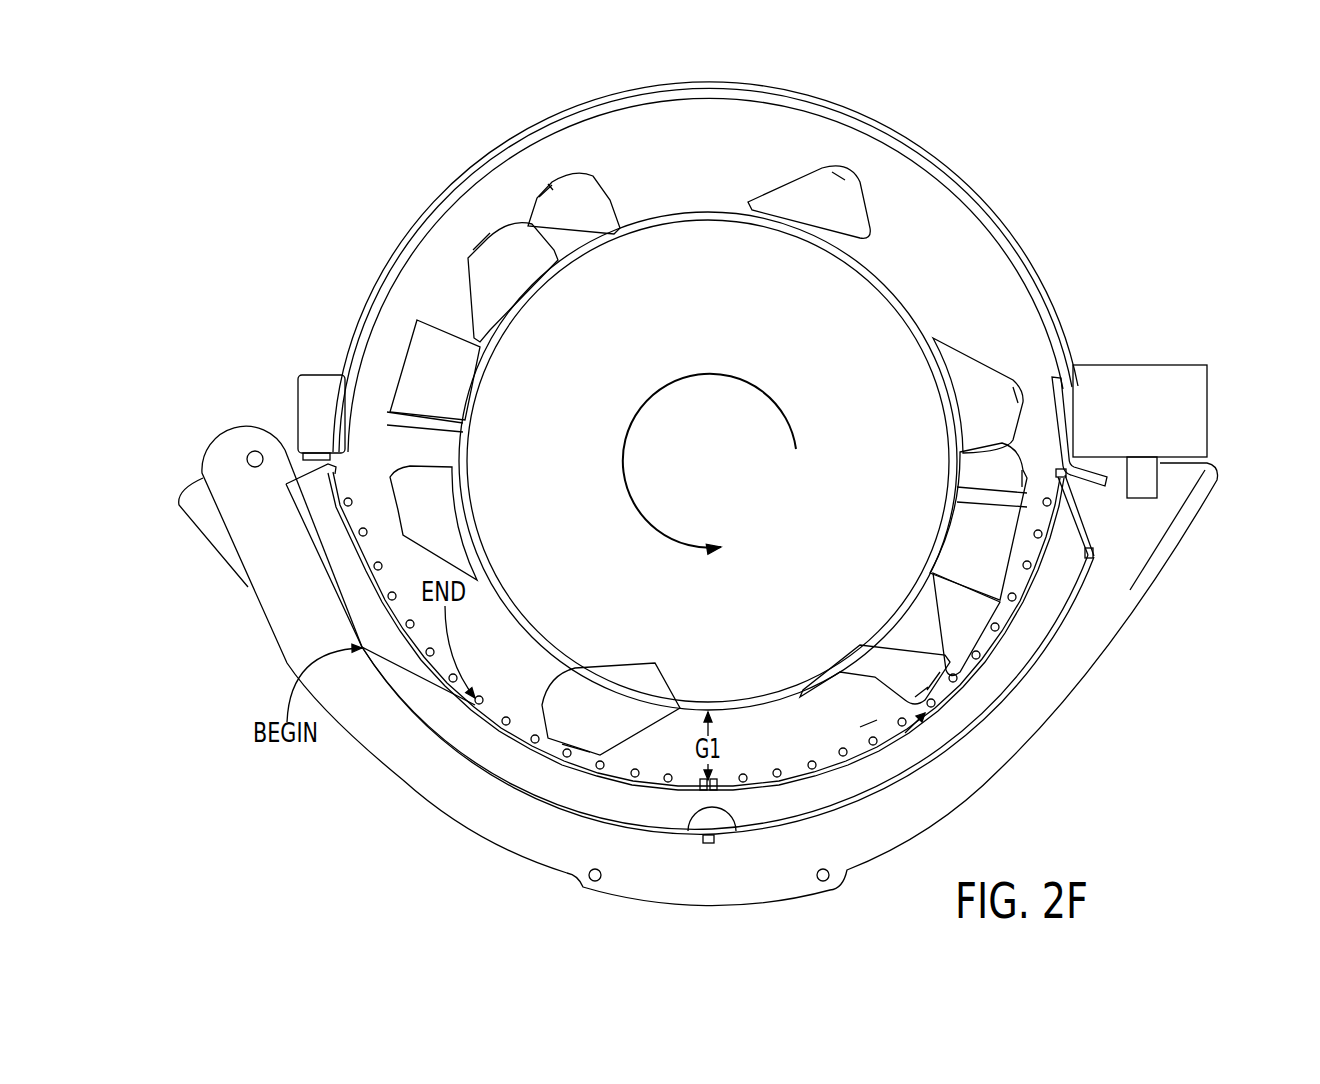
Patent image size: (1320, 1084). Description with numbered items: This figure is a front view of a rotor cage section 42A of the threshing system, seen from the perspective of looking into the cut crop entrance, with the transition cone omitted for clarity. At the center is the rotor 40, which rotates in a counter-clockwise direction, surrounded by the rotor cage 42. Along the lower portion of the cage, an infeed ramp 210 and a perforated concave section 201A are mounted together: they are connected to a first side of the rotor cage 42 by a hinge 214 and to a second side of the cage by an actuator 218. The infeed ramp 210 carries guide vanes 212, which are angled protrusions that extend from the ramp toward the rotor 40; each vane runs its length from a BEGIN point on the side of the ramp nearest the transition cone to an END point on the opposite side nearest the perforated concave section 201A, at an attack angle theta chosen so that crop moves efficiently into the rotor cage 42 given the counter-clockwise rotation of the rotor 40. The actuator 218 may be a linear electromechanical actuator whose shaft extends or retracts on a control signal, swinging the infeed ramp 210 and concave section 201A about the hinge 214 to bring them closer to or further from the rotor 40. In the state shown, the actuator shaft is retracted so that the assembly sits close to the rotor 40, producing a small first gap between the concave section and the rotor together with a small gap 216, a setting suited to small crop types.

The rotor 40 is at (828, 328).
The rotor cage 42 is at (355, 292).
The rotor cage section 42A is at (1140, 124).
The perforated concave section 201A is at (760, 768).
The infeed ramp 210 is at (1068, 605).
The guide vanes 212 is at (430, 692).
The hinge 214 is at (257, 450).
The gap 216 is at (1110, 472).
The actuator 218 is at (1158, 446).